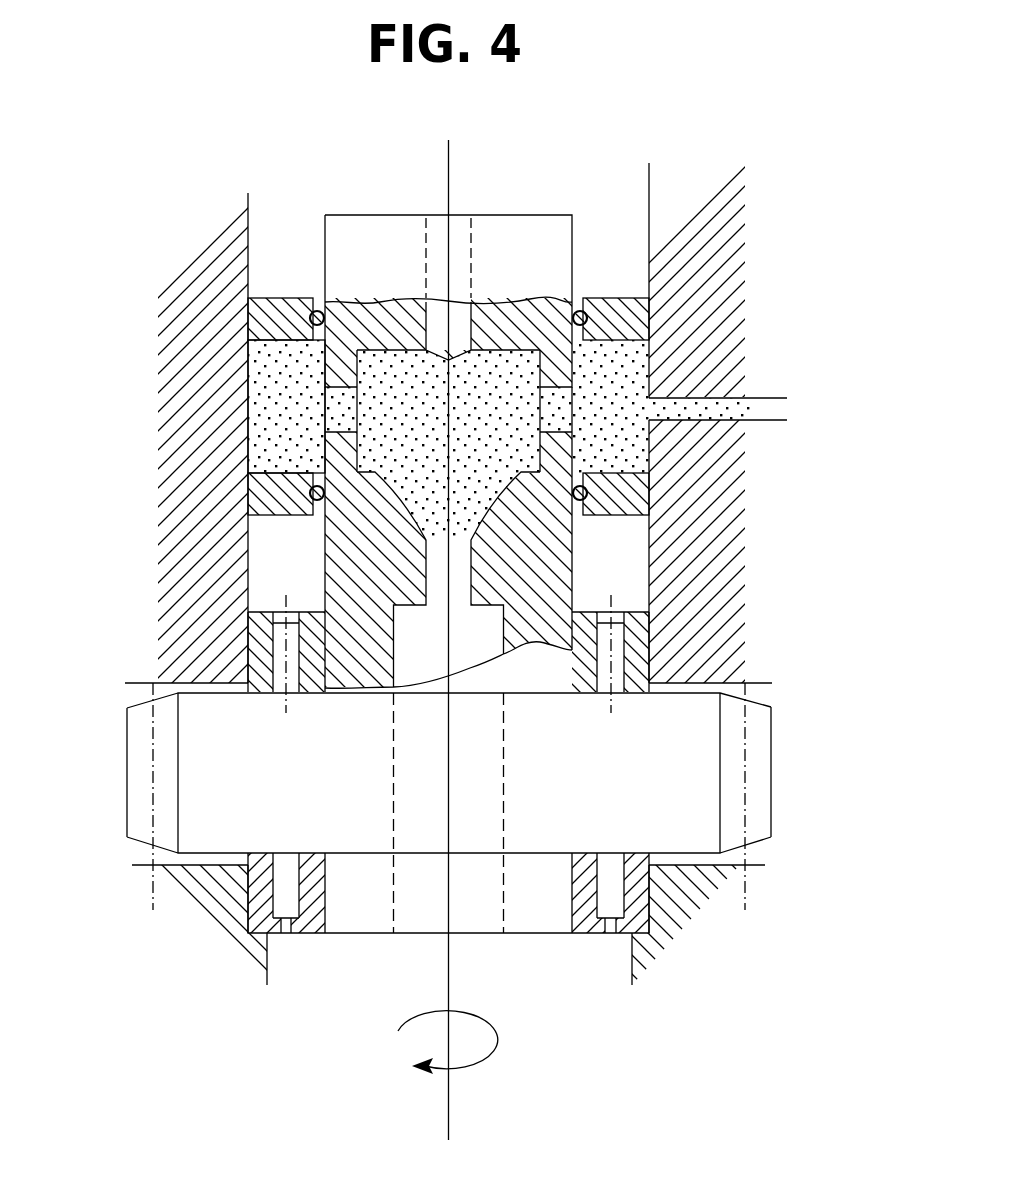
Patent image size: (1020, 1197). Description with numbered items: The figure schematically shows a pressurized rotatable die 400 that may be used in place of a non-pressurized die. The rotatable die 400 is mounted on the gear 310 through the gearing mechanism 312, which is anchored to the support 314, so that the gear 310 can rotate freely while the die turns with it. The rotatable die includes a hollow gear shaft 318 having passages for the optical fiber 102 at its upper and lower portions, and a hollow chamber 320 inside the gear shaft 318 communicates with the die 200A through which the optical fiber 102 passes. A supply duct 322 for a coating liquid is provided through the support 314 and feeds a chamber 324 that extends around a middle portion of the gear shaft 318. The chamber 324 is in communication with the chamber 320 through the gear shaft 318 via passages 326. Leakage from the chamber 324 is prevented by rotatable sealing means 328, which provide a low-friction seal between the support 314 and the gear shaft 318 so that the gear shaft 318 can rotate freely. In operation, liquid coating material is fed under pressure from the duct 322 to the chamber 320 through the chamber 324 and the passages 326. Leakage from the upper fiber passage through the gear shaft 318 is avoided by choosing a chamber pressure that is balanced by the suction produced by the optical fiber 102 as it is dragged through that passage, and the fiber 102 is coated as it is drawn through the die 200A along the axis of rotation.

The rotatable die 400 is at (497, 214).
The rotatable sealing means 328 is at (645, 308).
The hollow chamber 320 is at (512, 378).
The duct 322 is at (735, 410).
The passages 326 is at (330, 402).
The chamber 324 is at (262, 430).
The die 200A is at (337, 556).
The hollow gear shaft 318 is at (553, 578).
The second gear 310 is at (185, 744).
The support 314 is at (205, 915).
The second bearing mechanism 312 is at (583, 934).
The optical fiber 102 is at (448, 1117).